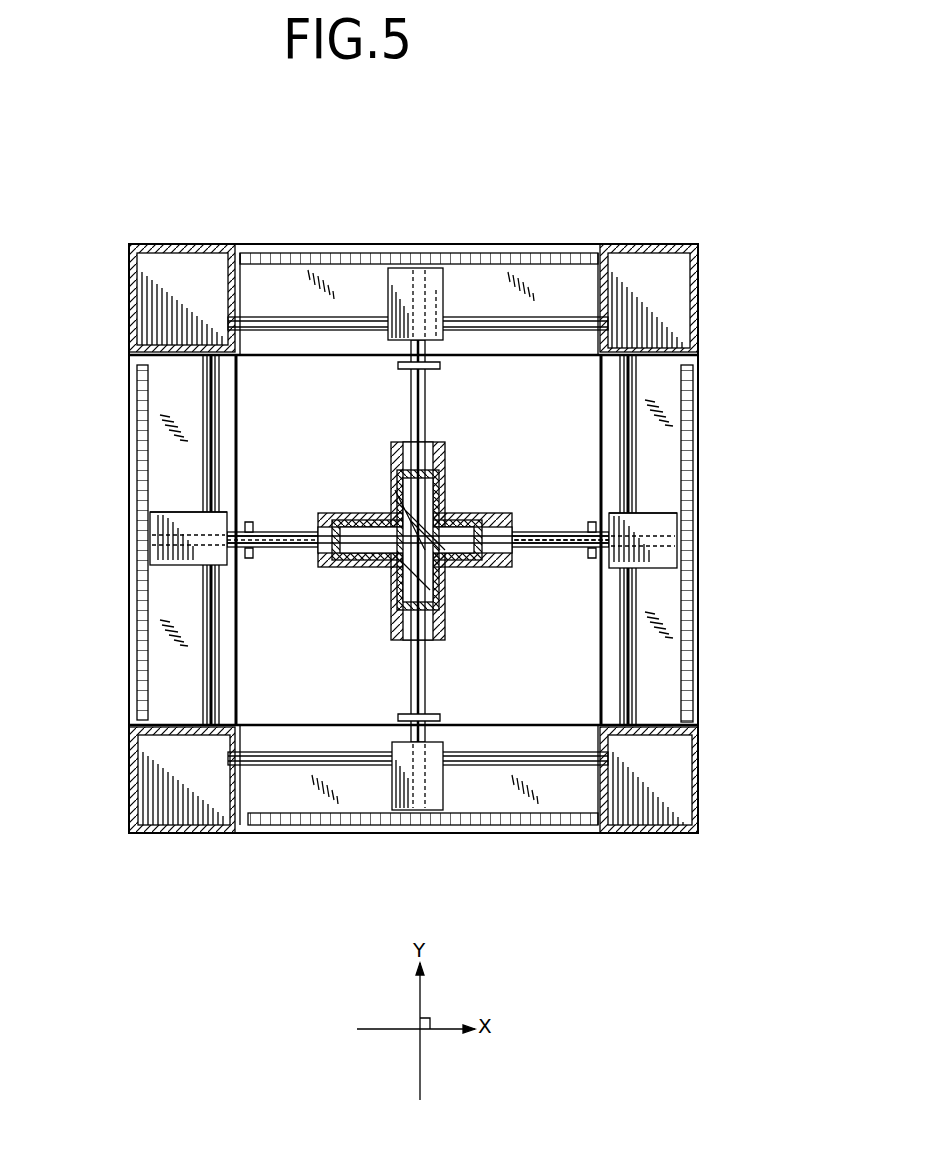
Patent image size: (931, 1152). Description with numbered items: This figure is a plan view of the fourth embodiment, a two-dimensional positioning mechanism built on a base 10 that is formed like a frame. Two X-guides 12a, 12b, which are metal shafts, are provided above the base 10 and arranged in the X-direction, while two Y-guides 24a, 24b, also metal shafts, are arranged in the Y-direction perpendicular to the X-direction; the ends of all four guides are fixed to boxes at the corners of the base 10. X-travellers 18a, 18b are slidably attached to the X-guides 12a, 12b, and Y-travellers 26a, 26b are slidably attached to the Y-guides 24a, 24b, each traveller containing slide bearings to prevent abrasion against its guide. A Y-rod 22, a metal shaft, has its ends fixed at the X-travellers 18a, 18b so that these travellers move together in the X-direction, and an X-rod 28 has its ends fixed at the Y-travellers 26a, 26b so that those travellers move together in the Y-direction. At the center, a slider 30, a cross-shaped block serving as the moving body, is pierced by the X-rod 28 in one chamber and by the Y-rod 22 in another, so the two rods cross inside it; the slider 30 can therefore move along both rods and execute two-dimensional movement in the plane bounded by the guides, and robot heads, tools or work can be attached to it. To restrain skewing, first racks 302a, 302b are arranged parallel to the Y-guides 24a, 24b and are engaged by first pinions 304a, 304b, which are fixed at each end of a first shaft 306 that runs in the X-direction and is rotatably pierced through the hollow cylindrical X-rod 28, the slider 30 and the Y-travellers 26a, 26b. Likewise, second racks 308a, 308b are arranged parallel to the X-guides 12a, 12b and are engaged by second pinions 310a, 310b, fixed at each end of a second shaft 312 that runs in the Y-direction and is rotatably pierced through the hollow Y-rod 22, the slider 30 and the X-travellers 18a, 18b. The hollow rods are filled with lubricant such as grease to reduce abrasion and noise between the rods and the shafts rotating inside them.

The base 10 is at (583, 837).
The X-guide 12a is at (303, 752).
The X-guide 12b is at (258, 325).
The X-traveller 18a is at (445, 780).
The X-traveller 18b is at (503, 282).
The Y-rod 22 is at (427, 412).
The Y-guide 24a is at (634, 673).
The Y-guide 24b is at (210, 685).
The Y-traveller 26a is at (647, 528).
The Y-traveller 26b is at (182, 512).
The X-rod 28 is at (547, 548).
The slider 30 is at (498, 507).
The first rack 302a is at (690, 383).
The first rack 302b is at (140, 613).
The first pinion 304a is at (678, 540).
The first pinion 304b is at (147, 543).
The first shaft 306 is at (287, 534).
The second rack 308a is at (290, 811).
The second rack 308b is at (354, 257).
The second pinion 310a is at (420, 833).
The second pinion 310b is at (418, 269).
The second shaft 312 is at (450, 308).